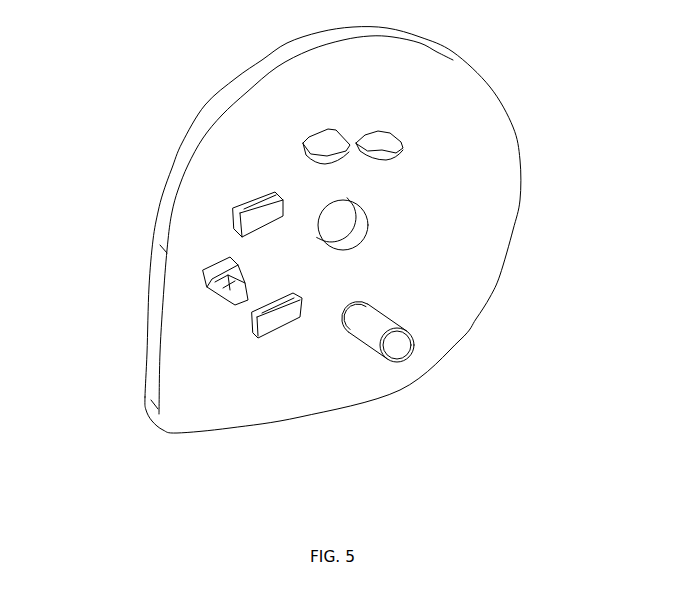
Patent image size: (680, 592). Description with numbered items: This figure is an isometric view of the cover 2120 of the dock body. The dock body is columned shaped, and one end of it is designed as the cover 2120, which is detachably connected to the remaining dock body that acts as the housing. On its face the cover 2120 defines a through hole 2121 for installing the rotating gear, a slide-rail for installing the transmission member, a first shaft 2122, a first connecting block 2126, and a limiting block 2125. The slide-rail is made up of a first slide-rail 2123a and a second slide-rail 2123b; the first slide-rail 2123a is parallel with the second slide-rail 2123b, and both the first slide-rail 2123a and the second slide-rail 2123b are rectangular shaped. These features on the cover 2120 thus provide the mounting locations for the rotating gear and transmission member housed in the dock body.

The cover 2120 is at (480, 163).
The through hole 2121 is at (332, 218).
The first shaft 2122 is at (365, 323).
The first slide-rail 2123a is at (238, 202).
The second slide-rail 2123b is at (270, 315).
The limiting block 2125 is at (368, 132).
The first connecting block 2126 is at (222, 296).